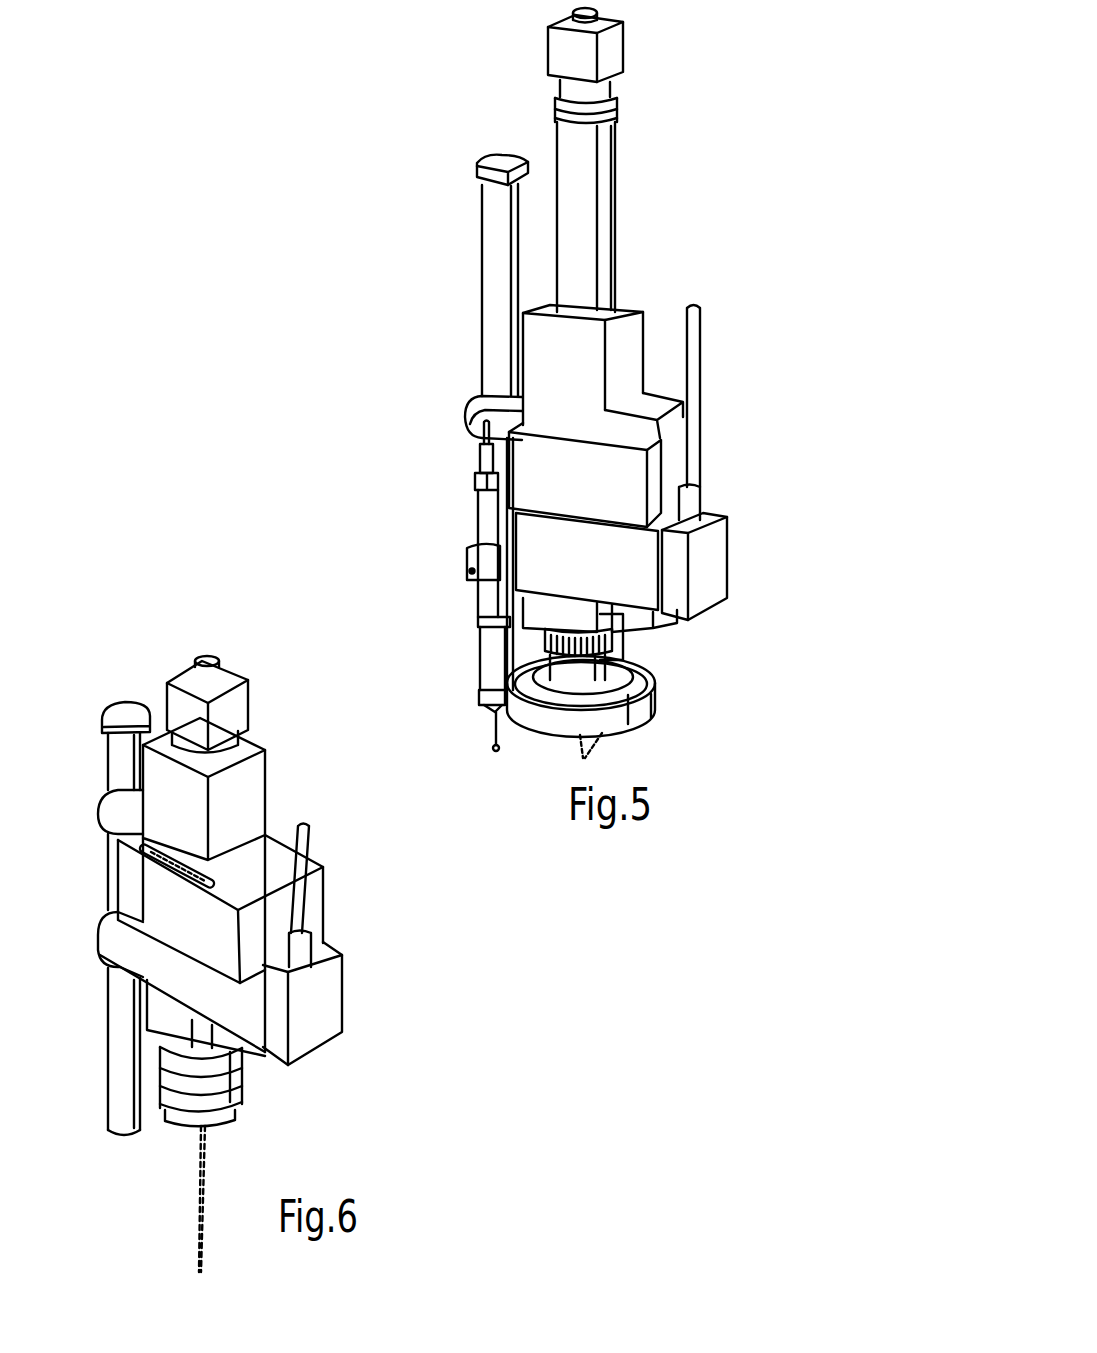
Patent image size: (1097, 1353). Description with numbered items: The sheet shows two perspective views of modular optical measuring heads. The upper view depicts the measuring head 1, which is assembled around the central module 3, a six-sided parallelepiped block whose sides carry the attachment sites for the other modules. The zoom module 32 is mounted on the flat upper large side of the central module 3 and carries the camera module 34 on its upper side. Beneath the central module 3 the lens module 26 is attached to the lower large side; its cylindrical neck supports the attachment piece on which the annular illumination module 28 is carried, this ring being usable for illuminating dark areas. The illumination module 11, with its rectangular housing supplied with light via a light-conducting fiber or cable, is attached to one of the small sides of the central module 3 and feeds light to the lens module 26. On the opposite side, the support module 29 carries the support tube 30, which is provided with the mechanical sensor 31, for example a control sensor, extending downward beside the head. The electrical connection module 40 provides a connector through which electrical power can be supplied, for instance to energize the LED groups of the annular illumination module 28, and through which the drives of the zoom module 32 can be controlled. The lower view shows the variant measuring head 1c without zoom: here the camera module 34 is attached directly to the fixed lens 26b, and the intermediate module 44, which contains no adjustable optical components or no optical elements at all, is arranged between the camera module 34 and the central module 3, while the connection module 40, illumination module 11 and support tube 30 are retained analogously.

In FIG. 5, the optical measuring head 1 is at (716, 138).
In FIG. 6, the optical measuring head 1c is at (340, 848).
In FIG. 5, the central module 3 is at (600, 578).
In FIG. 6, the central module 3 is at (213, 1011).
In FIG. 5, the illumination module 11 is at (712, 557).
In FIG. 6, the illumination module 11 is at (323, 1002).
In FIG. 5, the lens module 26 is at (602, 663).
In FIG. 6, the fixed lens 26b is at (238, 1090).
In FIG. 5, the annular illumination module 28 is at (656, 699).
In FIG. 5, the support module 29 is at (506, 530).
In FIG. 5, the support tube 30 is at (500, 283).
In FIG. 6, the support tube 30 is at (123, 1067).
In FIG. 5, the mechanical sensor 31 is at (498, 655).
In FIG. 5, the zoom module 32 is at (632, 352).
In FIG. 5, the camera module 34 is at (613, 52).
In FIG. 6, the camera module 34 is at (233, 710).
In FIG. 5, the electrical connection module 40 is at (598, 498).
In FIG. 6, the electrical connection module 40 is at (186, 931).
In FIG. 6, the intermediate module 44 is at (242, 805).